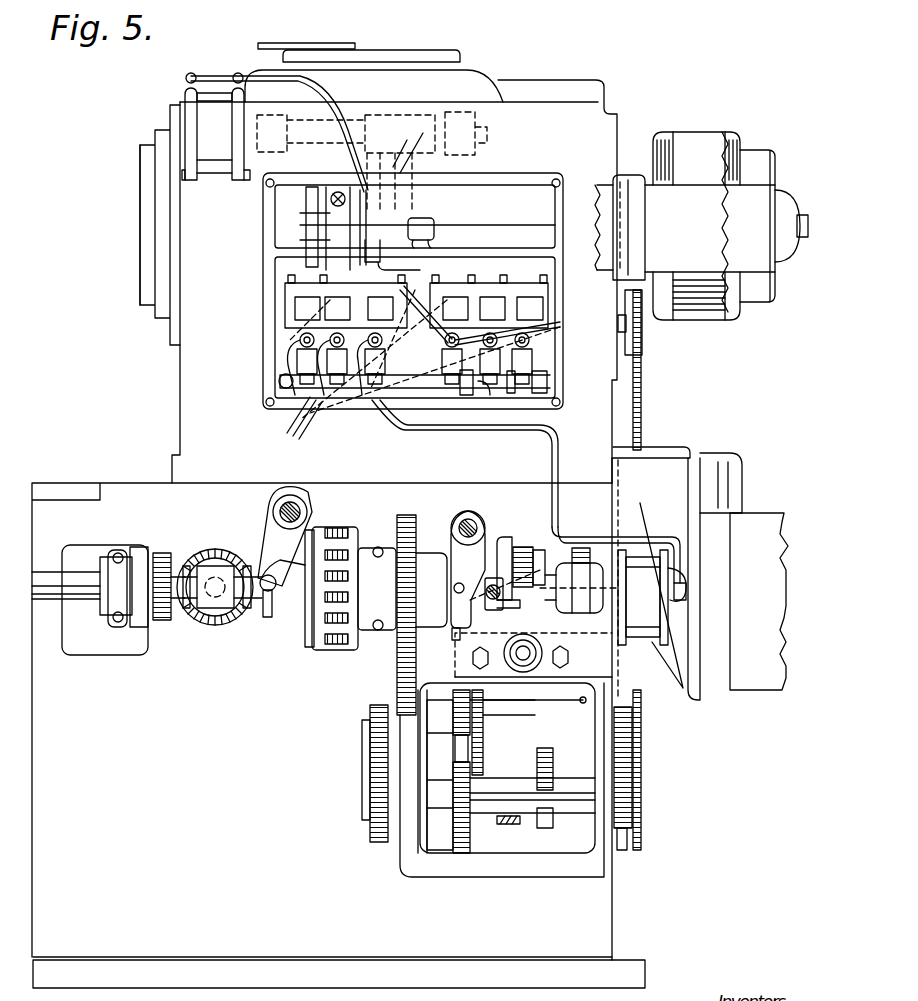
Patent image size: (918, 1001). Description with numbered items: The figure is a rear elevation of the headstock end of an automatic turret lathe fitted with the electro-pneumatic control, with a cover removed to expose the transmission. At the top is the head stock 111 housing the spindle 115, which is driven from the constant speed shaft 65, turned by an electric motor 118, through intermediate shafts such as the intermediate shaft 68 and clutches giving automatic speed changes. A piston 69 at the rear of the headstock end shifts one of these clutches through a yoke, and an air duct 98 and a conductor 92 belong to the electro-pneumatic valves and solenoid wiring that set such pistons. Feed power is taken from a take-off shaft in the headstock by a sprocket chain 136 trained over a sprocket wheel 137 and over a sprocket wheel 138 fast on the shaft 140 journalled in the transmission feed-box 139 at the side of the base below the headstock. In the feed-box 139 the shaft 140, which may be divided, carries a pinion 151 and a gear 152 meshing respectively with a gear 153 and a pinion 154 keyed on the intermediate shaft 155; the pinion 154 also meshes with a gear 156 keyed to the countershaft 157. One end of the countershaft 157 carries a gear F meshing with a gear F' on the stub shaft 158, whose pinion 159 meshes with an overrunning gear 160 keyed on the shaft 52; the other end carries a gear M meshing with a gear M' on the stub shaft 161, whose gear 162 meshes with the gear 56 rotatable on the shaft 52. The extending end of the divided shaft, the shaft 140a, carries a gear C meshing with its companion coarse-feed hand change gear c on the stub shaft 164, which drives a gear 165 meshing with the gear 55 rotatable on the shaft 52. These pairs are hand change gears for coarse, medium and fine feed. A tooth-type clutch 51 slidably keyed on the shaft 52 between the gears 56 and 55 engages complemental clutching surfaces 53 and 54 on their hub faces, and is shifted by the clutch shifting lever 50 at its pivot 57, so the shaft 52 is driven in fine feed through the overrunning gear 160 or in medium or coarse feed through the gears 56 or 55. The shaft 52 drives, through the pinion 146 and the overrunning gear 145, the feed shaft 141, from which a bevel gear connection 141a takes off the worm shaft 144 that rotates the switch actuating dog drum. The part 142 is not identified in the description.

The piston 69 is at (213, 152).
The spindle 115 is at (145, 188).
The head stock 111 is at (608, 126).
The electric motor 118 is at (698, 143).
The conductor 92 is at (567, 292).
The constant speed shaft 65 is at (406, 225).
The intermediate shaft 68 is at (432, 224).
The sprocket wheel 137 is at (643, 337).
The sprocket chain 136 is at (644, 389).
The sprocket wheel 138 is at (645, 840).
The support member 142 is at (759, 515).
The feed-shaft 141 is at (43, 570).
The worm shaft 144 is at (213, 560).
The bevel gear connection 141a is at (192, 614).
The overrunning gear 145 is at (396, 665).
The pinion 146 is at (403, 690).
The overrunning gear 160 is at (438, 712).
The clutch shifting lever 50 is at (488, 607).
The air duct 98 is at (656, 587).
The complemental clutching surface 53 is at (468, 688).
The pivot 57 is at (523, 645).
The complemental clutching surface 54 is at (540, 638).
The gear 56 is at (548, 700).
The transmission feed-box 139 is at (405, 838).
The gear 152 is at (462, 853).
The gear 156 is at (462, 810).
The gear 55 is at (482, 720).
The clutch 51 is at (504, 715).
The gear 165 is at (492, 758).
The intermediate shaft 155 is at (515, 785).
The countershaft 157 is at (508, 808).
The gear 153 is at (550, 783).
The pinion 151 is at (551, 828).
The shaft 140 is at (510, 826).
The shaft 52 is at (586, 700).
The hand change gear for coarse feed C is at (370, 805).
The hand change gear for fine feed F' is at (346, 711).
The hand change gear for coarse feed c is at (370, 722).
The pinion 159 is at (395, 725).
The stub shaft 158 is at (400, 735).
The stub shaft 164 is at (372, 748).
The pinion 154 is at (460, 778).
The shaft 140a is at (445, 812).
The hand change gear for fine feed F is at (357, 849).
The stub shaft 161 is at (620, 740).
The hand change gear for medium feed M' is at (652, 757).
The gear 162 is at (622, 762).
The hand change gear for medium feed M is at (628, 854).